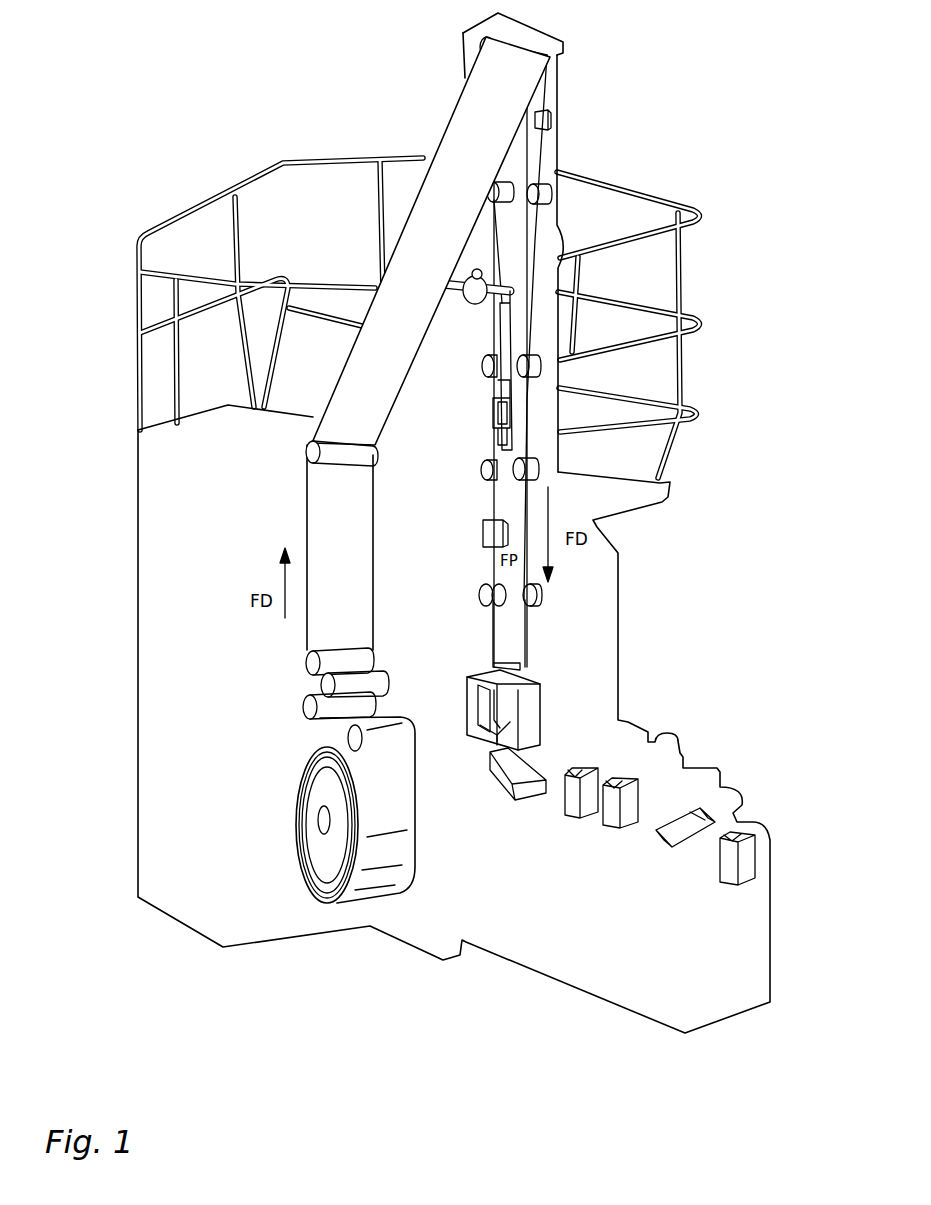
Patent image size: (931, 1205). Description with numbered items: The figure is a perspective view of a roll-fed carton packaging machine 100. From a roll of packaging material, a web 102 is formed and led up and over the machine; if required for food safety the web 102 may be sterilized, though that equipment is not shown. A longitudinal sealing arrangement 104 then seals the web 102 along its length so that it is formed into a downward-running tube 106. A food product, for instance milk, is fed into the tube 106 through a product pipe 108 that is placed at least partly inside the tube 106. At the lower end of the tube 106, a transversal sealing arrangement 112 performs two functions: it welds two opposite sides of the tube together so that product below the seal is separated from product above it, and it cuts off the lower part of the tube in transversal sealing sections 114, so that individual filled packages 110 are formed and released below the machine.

The packaging machine 100 is at (723, 98).
The web 102 is at (322, 493).
The longitudinal sealing arrangement 104 is at (500, 410).
The tube 106 is at (507, 630).
The product pipe 108 is at (514, 289).
The package 110 is at (630, 797).
The transversal sealing arrangement 112 is at (530, 712).
The transversal sealing sections 114 is at (513, 663).